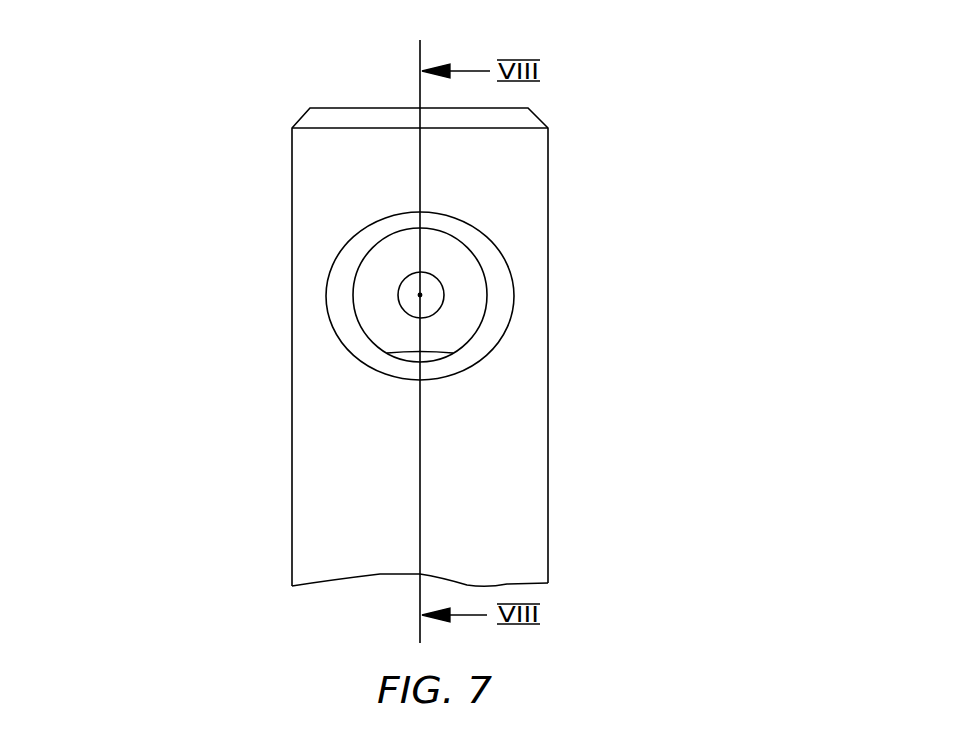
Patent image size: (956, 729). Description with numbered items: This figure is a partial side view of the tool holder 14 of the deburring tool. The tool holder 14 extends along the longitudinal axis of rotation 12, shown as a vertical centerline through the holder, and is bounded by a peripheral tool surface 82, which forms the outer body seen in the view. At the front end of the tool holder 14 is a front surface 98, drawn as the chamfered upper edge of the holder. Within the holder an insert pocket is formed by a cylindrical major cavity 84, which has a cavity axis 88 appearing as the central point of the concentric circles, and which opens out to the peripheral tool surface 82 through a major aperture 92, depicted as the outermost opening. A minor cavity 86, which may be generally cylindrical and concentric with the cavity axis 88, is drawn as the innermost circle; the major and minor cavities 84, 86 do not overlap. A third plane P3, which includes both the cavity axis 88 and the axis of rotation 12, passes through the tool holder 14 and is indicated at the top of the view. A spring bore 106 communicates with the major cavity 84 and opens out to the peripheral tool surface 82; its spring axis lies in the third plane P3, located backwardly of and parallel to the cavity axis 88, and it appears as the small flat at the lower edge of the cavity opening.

The longitudinal axis of rotation 12 is at (420, 60).
The tool holder 14 is at (348, 337).
The third plane P3 is at (418, 82).
The peripheral tool surface 82 is at (487, 492).
The major cavity 84 is at (380, 284).
The minor cavity 86 is at (403, 293).
The cavity axis 88 is at (422, 295).
The major aperture 92 is at (488, 233).
The front surface 98 is at (497, 108).
The spring bore 106 is at (396, 372).